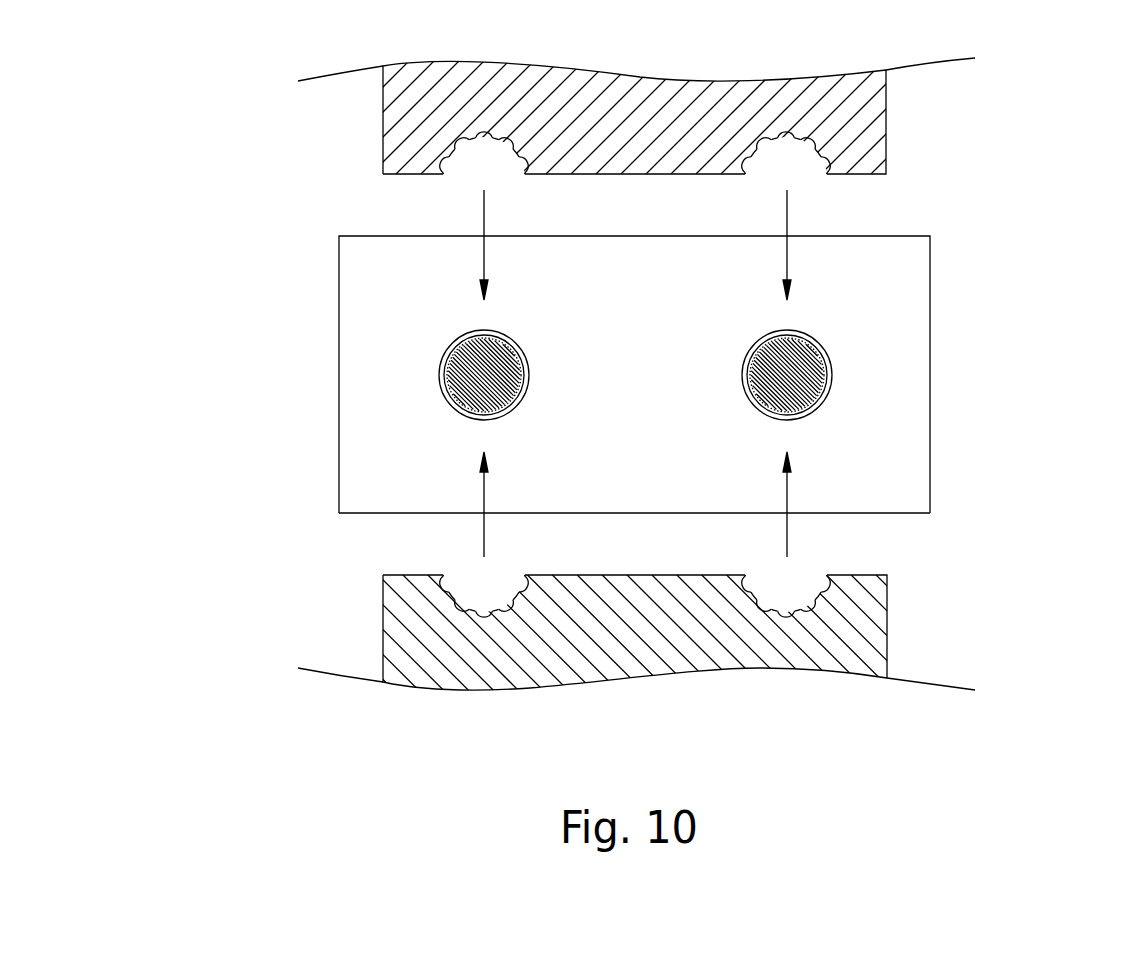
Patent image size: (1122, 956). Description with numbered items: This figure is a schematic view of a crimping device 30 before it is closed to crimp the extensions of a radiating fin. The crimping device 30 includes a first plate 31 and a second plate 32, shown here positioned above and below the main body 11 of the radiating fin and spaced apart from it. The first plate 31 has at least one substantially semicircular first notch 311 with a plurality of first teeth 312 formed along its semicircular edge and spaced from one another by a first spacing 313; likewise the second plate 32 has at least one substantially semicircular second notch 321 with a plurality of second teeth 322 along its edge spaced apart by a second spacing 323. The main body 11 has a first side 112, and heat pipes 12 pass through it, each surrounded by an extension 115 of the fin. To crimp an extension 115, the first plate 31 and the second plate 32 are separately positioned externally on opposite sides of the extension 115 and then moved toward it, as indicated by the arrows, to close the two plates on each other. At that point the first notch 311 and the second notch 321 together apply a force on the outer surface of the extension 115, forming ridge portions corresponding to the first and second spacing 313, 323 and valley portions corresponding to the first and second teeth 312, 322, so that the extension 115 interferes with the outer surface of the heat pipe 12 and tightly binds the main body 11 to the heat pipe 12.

The crimping device 30 is at (912, 128).
The first plate 31 is at (403, 106).
The first notch 311 is at (790, 162).
The first teeth 312 is at (447, 157).
The first spacing 313 is at (468, 137).
The second plate 32 is at (402, 632).
The second notch 321 is at (480, 587).
The second teeth 322 is at (822, 590).
The second spacing 323 is at (803, 608).
The main body 11 is at (322, 382).
The first side 112 is at (895, 485).
The extension 115 is at (822, 343).
The heat pipe 12 is at (795, 383).